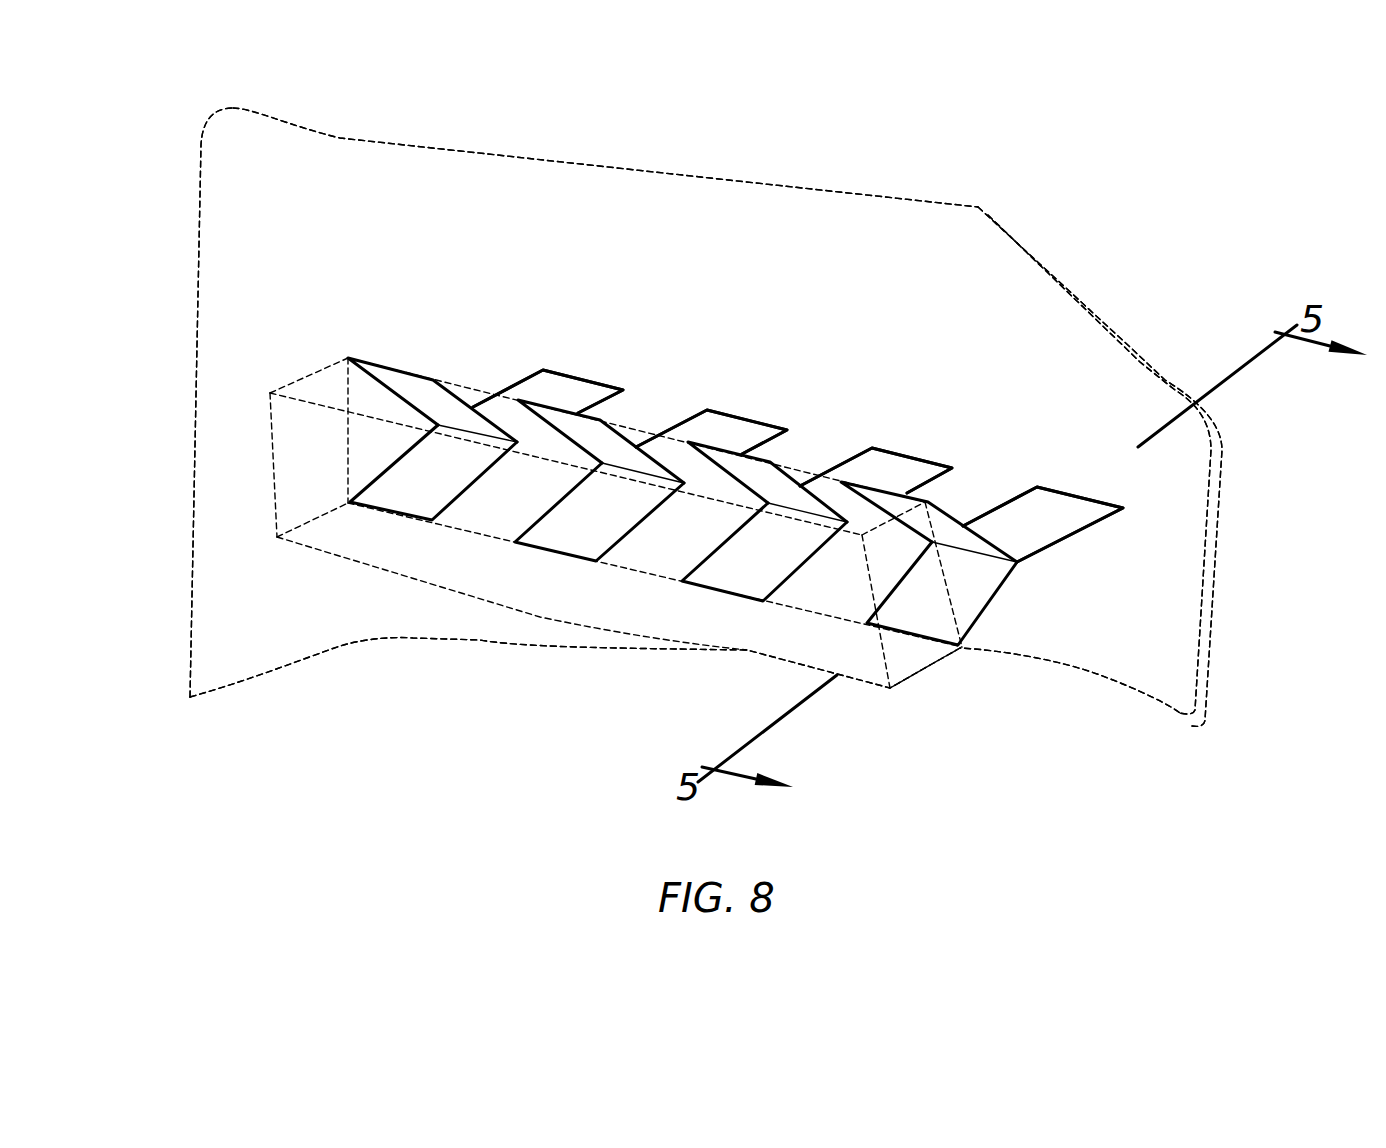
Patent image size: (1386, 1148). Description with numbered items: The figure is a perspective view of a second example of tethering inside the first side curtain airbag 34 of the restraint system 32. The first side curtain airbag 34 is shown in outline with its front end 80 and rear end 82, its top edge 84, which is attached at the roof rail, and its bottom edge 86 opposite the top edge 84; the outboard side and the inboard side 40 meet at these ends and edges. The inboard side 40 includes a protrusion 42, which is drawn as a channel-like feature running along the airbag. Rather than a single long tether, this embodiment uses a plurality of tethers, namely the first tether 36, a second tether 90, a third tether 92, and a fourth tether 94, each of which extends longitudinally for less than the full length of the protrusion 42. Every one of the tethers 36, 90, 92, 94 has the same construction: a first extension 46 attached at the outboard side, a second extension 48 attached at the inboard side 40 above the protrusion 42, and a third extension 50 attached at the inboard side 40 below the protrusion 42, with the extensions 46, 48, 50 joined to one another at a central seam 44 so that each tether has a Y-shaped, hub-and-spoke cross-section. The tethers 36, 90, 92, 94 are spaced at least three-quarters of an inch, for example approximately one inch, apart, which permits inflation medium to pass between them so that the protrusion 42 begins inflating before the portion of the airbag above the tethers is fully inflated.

The restraint system 32 is at (920, 121).
The first side curtain airbag 34 is at (1143, 302).
The tether 36 is at (1071, 463).
The inboard side 40 is at (393, 607).
The protrusion 42 is at (593, 627).
The central seam 44 is at (499, 440).
The first extension 46 is at (625, 392).
The second extension 48 is at (453, 386).
The third extension 50 is at (461, 496).
The front end 80 is at (1224, 594).
The rear end 82 is at (200, 330).
The top edge 84 is at (655, 170).
The bottom edge 86 is at (437, 643).
The second tether 90 is at (909, 442).
The third tether 92 is at (748, 404).
The fourth tether 94 is at (588, 367).